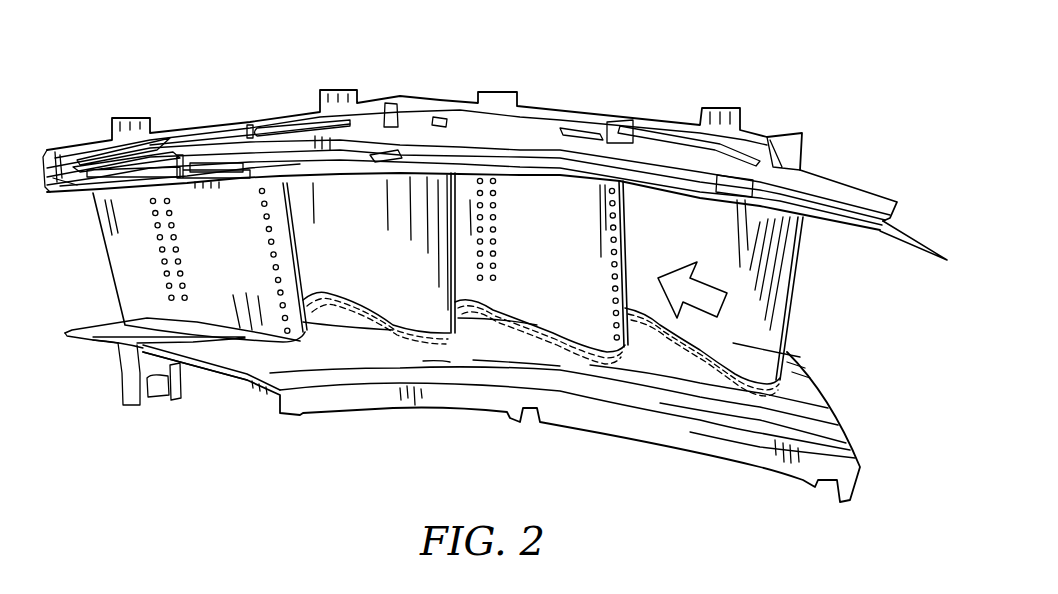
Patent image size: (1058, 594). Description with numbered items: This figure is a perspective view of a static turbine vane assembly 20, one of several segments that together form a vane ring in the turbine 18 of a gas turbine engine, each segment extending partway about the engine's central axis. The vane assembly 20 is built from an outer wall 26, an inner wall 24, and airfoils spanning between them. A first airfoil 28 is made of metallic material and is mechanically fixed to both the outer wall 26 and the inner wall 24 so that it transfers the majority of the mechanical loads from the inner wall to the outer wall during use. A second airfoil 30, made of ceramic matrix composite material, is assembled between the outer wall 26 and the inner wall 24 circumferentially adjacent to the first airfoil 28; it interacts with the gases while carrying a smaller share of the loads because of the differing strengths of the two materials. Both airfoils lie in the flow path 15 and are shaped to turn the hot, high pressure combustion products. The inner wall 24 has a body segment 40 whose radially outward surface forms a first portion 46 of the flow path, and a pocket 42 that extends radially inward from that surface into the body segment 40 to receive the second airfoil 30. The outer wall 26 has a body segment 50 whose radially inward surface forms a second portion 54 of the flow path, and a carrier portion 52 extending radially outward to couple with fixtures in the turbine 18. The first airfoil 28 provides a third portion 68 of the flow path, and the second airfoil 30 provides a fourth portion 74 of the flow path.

The flow path 15 is at (700, 295).
The turbine 18 is at (812, 105).
The turbine vane assembly 20 is at (835, 158).
The inner wall 24 is at (823, 427).
The outer wall 26 is at (840, 237).
The first airfoil 28 is at (217, 293).
The second airfoil 30 is at (410, 288).
The body segment 40 is at (170, 348).
The pocket 42 is at (388, 330).
The first portion of the flow path 46 is at (803, 397).
The body segment 50 is at (115, 178).
The carrier portion 52 is at (100, 133).
The second portion of the flow path 54 is at (240, 187).
The third portion of the flow path 68 is at (157, 270).
The fourth portion of the flow path 74 is at (363, 205).